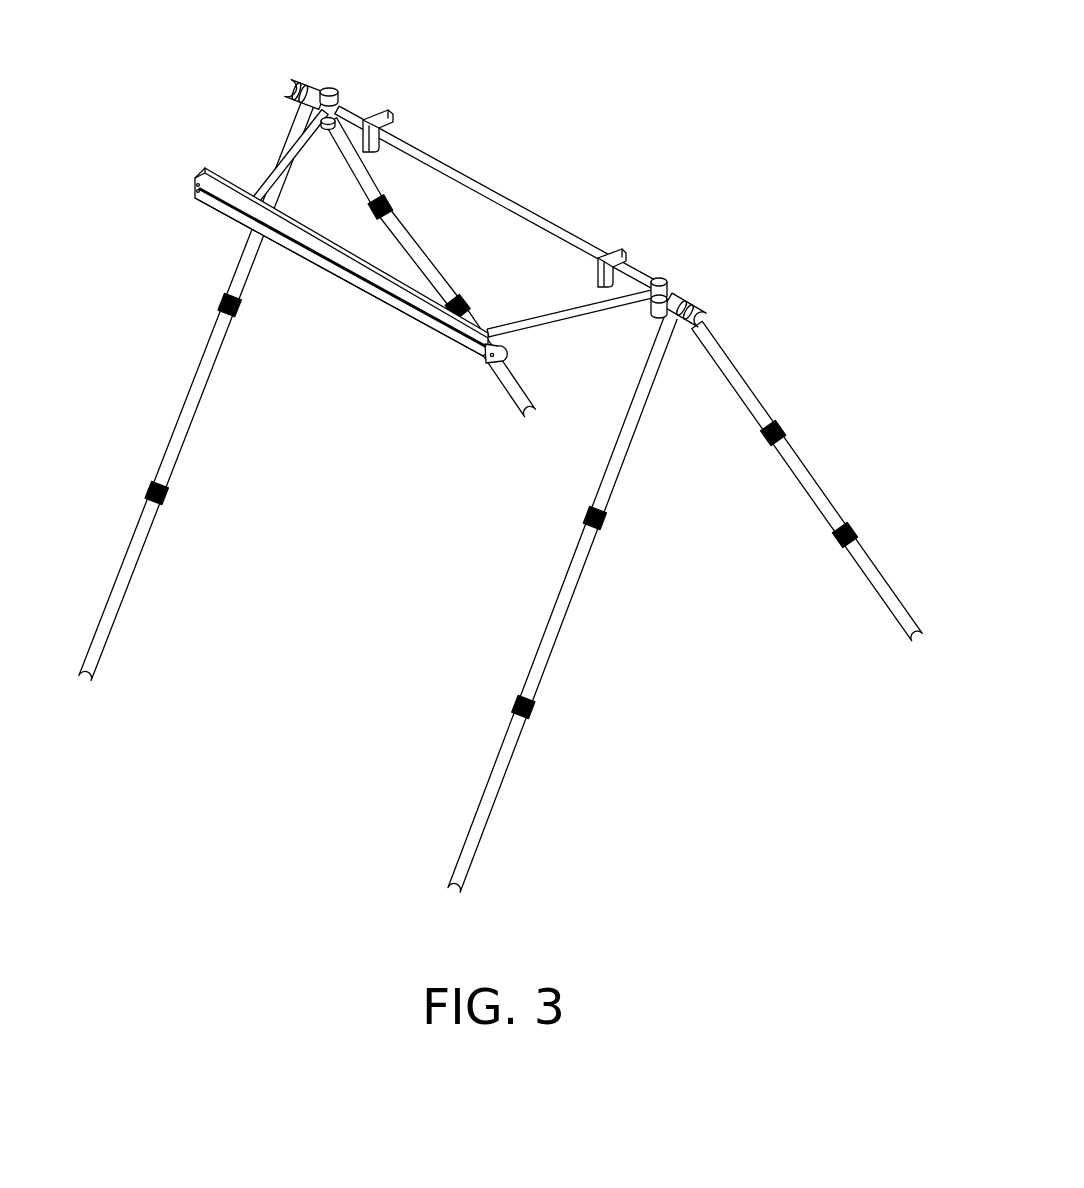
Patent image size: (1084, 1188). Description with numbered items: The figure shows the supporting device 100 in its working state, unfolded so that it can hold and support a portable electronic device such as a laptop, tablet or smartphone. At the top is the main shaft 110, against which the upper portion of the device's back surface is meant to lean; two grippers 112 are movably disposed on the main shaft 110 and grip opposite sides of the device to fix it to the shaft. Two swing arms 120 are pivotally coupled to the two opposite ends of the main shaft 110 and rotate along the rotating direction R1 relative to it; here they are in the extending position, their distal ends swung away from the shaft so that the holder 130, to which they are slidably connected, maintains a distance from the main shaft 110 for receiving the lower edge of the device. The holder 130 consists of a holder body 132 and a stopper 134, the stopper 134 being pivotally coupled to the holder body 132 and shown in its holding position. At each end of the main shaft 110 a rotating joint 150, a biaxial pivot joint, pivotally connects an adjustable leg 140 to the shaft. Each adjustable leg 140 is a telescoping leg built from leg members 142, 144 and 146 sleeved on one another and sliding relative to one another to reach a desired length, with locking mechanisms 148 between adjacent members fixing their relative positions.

The supporting device 100 is at (732, 148).
The main shaft 110 is at (492, 197).
The gripper 112 is at (380, 110).
The swing arm 120 is at (262, 178).
The holder 130 is at (420, 392).
The holder body 132 is at (407, 316).
The stopper 134 is at (375, 272).
The adjustable leg 140 is at (500, 497).
The telescoping leg member 142 is at (613, 483).
The telescoping leg member 144 is at (569, 596).
The telescoping leg member 146 is at (502, 763).
The leg connector 148 is at (606, 524).
The rotating joint 150 is at (293, 80).
The rotating direction R1 is at (334, 53).